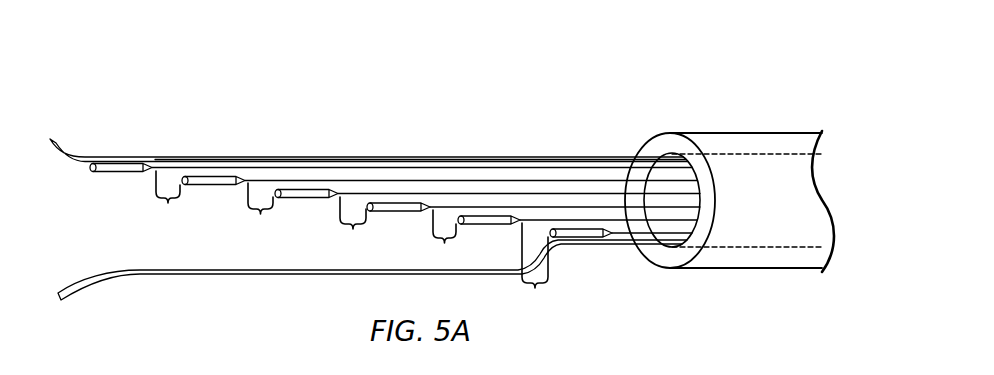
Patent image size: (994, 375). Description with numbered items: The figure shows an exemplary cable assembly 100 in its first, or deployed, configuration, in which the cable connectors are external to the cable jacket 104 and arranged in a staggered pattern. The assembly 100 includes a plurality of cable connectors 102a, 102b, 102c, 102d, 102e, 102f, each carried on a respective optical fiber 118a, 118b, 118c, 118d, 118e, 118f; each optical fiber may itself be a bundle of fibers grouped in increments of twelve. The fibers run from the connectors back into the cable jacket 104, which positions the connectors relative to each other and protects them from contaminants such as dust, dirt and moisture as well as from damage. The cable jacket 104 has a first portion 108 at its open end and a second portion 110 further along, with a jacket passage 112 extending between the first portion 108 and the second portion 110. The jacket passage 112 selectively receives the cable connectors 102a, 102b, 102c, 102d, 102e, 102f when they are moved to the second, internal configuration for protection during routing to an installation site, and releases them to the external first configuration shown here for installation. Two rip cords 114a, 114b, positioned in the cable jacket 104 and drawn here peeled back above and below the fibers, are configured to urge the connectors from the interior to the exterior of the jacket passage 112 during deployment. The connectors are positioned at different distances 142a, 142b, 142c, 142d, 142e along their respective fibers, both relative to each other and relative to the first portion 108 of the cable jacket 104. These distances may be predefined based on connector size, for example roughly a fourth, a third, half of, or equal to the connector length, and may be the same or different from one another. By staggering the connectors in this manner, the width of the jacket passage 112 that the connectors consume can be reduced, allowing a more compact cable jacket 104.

The assembly 100 is at (631, 73).
The cable connector 102a is at (116, 158).
The cable connector 102b is at (211, 172).
The cable connector 102c is at (301, 186).
The cable connector 102d is at (391, 199).
The cable connector 102e is at (483, 212).
The cable connector 102f is at (574, 225).
The cable jacket 104 is at (723, 195).
The first portion 108 is at (667, 258).
The second portion 110 is at (813, 160).
The jacket passage 112 is at (740, 248).
The rip cord 114a is at (68, 152).
The rip cord 114b is at (83, 288).
The optical fiber 118a is at (173, 167).
The optical fiber 118b is at (258, 180).
The optical fiber 118c is at (347, 193).
The optical fiber 118d is at (442, 207).
The optical fiber 118e is at (530, 220).
The optical fiber 118f is at (617, 233).
The distance 142a is at (166, 199).
The distance 142b is at (260, 211).
The distance 142c is at (352, 226).
The distance 142d is at (448, 238).
The distance 142e is at (534, 268).